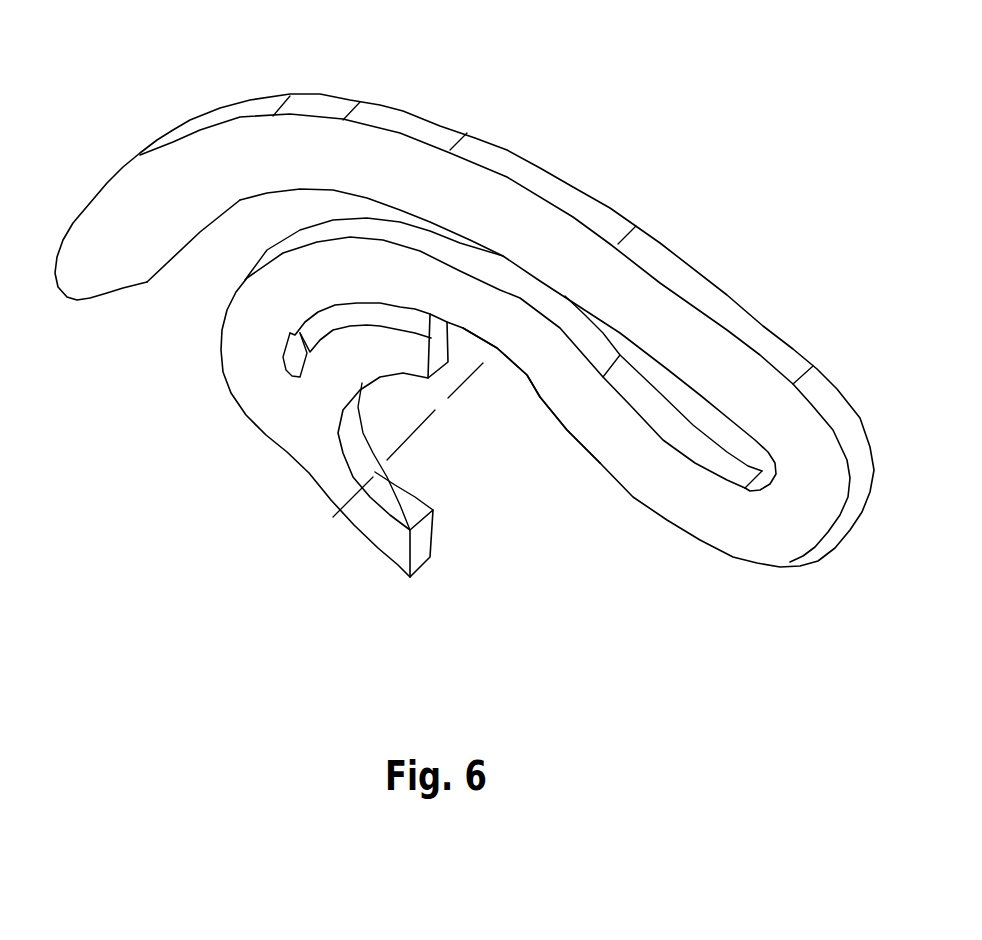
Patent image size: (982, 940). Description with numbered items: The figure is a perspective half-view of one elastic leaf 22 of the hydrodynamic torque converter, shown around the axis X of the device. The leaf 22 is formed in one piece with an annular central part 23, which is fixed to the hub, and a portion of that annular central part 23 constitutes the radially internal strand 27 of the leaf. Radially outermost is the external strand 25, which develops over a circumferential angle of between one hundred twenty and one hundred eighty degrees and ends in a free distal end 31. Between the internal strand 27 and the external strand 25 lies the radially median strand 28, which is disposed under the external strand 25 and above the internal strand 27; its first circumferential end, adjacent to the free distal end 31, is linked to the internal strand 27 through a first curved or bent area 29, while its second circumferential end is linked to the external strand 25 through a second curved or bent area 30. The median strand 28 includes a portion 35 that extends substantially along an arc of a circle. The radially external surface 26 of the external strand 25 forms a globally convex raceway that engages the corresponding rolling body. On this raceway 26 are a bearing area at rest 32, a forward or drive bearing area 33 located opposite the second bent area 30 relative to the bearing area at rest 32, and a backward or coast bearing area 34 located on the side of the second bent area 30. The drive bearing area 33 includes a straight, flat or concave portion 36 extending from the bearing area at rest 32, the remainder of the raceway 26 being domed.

The elastic leaf 22 is at (464, 330).
The annular central part 23 is at (365, 480).
The radially external strand 25 is at (508, 295).
The radially external surface 26 is at (495, 338).
The radially internal strand 27 is at (331, 447).
The radially median strand 28 is at (528, 447).
The first curved or bent area 29 is at (430, 397).
The second curved or bent area 30 is at (816, 502).
The free distal end 31 is at (156, 285).
The bearing area at rest 32 is at (490, 114).
The forward or drive bearing area 33 is at (316, 66).
The backward or coast bearing area 34 is at (606, 156).
The semi-circular portion 35 is at (531, 447).
The straight or flat or concave portion 36 is at (433, 91).
The axis X is at (408, 457).